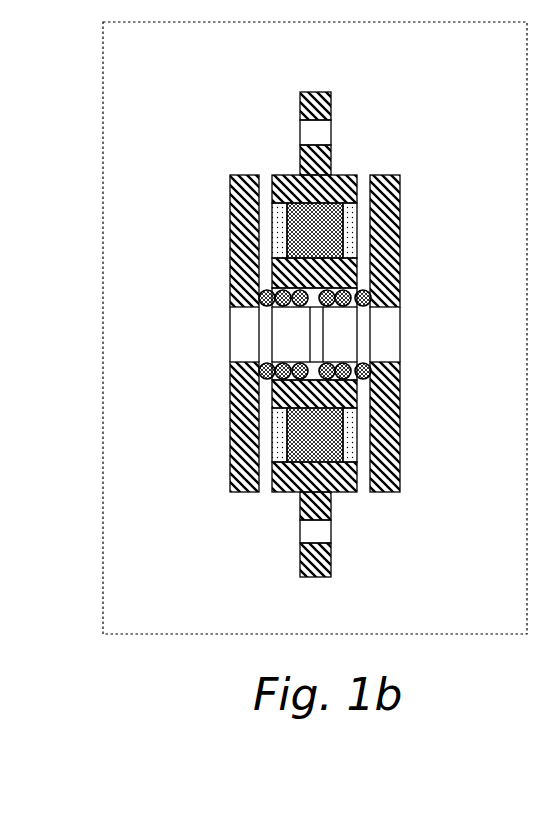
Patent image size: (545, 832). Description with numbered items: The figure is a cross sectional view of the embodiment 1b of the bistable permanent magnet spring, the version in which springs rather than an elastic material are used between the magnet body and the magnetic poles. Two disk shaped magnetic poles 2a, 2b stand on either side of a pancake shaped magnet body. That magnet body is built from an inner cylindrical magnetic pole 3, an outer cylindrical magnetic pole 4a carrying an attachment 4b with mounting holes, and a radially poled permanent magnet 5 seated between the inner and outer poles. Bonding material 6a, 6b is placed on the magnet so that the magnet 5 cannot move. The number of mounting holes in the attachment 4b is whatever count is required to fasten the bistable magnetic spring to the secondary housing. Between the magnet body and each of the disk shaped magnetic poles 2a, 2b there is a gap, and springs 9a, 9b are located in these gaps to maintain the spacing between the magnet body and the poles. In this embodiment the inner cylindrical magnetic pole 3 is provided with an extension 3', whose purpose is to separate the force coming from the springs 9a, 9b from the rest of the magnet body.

The bistable magnetic spring embodiment 1b is at (96, 328).
The attachment 4b is at (311, 107).
The outer cylindrical magnetic pole 4a is at (280, 183).
The radially poled permanent magnet 5 is at (320, 233).
The spring 9a is at (260, 296).
The spring 9b is at (372, 296).
The inner cylindrical magnetic pole 3 is at (232, 341).
The extension of the inner cylindrical magnetic pole 3' is at (400, 336).
The bonding material 6a is at (280, 433).
The bonding material 6b is at (352, 437).
The disk shaped magnetic pole 2a is at (240, 472).
The disk shaped magnetic pole 2b is at (392, 462).